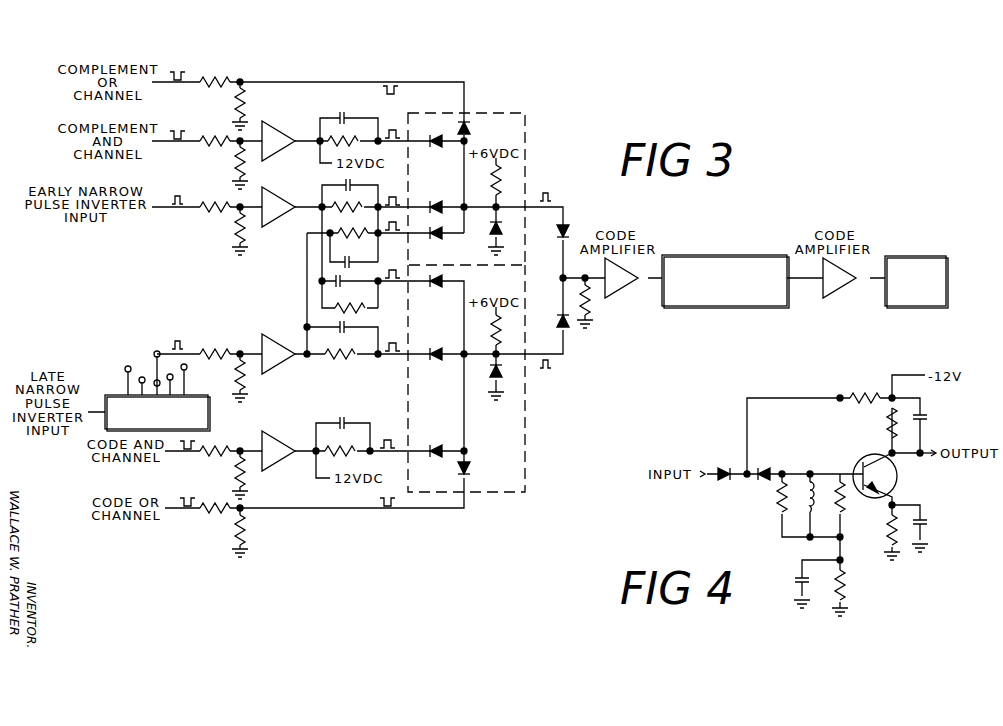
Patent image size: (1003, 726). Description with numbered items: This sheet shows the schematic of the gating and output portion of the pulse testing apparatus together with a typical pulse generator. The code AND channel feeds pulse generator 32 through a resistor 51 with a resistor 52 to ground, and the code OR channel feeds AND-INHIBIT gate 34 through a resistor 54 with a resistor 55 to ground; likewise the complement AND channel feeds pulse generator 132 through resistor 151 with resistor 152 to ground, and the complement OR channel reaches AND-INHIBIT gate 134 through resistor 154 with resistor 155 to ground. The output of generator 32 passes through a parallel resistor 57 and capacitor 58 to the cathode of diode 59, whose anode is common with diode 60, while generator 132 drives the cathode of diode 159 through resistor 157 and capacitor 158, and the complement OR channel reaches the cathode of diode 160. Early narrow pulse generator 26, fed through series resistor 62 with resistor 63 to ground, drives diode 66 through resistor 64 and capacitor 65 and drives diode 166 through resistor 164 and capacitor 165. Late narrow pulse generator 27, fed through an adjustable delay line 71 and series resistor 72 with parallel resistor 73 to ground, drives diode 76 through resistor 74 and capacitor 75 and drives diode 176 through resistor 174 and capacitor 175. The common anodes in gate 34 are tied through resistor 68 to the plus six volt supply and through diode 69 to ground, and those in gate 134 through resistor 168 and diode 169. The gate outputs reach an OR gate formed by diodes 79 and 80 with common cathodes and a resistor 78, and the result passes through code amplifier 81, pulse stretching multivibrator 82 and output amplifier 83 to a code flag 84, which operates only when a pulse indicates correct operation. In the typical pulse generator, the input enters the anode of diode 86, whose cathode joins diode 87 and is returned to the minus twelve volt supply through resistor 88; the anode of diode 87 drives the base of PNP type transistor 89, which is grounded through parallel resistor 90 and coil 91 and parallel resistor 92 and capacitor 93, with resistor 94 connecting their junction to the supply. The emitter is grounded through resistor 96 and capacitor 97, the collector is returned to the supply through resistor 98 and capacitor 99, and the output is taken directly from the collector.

In FIG. 3, the resistor 154 is at (212, 86).
In FIG. 3, the resistor 155 is at (245, 113).
In FIG. 3, the resistor 151 is at (213, 146).
In FIG. 3, the resistor 152 is at (236, 172).
In FIG. 3, the pulse generator 132 is at (276, 130).
In FIG. 3, the capacitor 158 is at (345, 116).
In FIG. 3, the resistor 157 is at (350, 141).
In FIG. 3, the series resistor 62 is at (210, 212).
In FIG. 3, the resistor 63 is at (236, 231).
In FIG. 3, the early narrow pulse generator 26 is at (283, 224).
In FIG. 3, the capacitor 165 is at (344, 183).
In FIG. 3, the resistor 164 is at (341, 210).
In FIG. 3, the resistor 174 is at (358, 238).
In FIG. 3, the capacitor 175 is at (352, 264).
In FIG. 3, the capacitor 65 is at (346, 284).
In FIG. 3, the resistor 64 is at (340, 310).
In FIG. 3, the capacitor 75 is at (352, 326).
In FIG. 3, the late narrow pulse generator 27 is at (276, 336).
In FIG. 3, the adjustable delay line 71 is at (110, 394).
In FIG. 3, the series resistor 72 is at (217, 352).
In FIG. 3, the parallel resistor 73 is at (246, 378).
In FIG. 3, the resistor 74 is at (344, 360).
In FIG. 3, the diode 159 is at (436, 149).
In FIG. 3, the diode 166 is at (439, 204).
In FIG. 3, the diode 176 is at (439, 239).
In FIG. 3, the diode 66 is at (439, 287).
In FIG. 3, the diode 76 is at (439, 360).
In FIG. 3, the diode 160 is at (471, 128).
In FIG. 3, the resistor 168 is at (501, 186).
In FIG. 3, the diode 169 is at (490, 233).
In FIG. 3, the resistor 68 is at (492, 328).
In FIG. 3, the diode 69 is at (501, 380).
In FIG. 3, the AND-INHIBIT gate 134 is at (496, 113).
In FIG. 3, the AND-INHIBIT gate 34 is at (501, 494).
In FIG. 3, the capacitor 58 is at (345, 421).
In FIG. 3, the resistor 57 is at (350, 458).
In FIG. 3, the diode 59 is at (441, 447).
In FIG. 3, the diode 60 is at (471, 468).
In FIG. 3, the pulse generator 32 is at (277, 440).
In FIG. 3, the resistor 51 is at (218, 448).
In FIG. 3, the resistor 52 is at (245, 479).
In FIG. 3, the resistor 54 is at (211, 516).
In FIG. 3, the resistor 55 is at (246, 531).
In FIG. 3, the diode 80 is at (557, 236).
In FIG. 3, the diode 79 is at (558, 326).
In FIG. 3, the resistor 78 is at (592, 318).
In FIG. 3, the code amplifier 81 is at (628, 293).
In FIG. 3, the pulse stretching multivibrator 82 is at (721, 308).
In FIG. 3, the output amplifier 83 is at (838, 297).
In FIG. 3, the code flag 84 is at (925, 309).
In FIG. 4, the diode 86 is at (715, 485).
In FIG. 4, the diode 87 is at (763, 484).
In FIG. 4, the resistor 88 is at (865, 387).
In FIG. 4, the PNP type transistor 89 is at (898, 481).
In FIG. 4, the resistor 90 is at (780, 506).
In FIG. 4, the coil 91 is at (815, 509).
In FIG. 4, the resistor 94 is at (844, 505).
In FIG. 4, the resistor 98 is at (888, 421).
In FIG. 4, the capacitor 99 is at (926, 419).
In FIG. 4, the capacitor 97 is at (926, 522).
In FIG. 4, the resistor 96 is at (887, 531).
In FIG. 4, the capacitor 93 is at (799, 575).
In FIG. 4, the resistor 92 is at (847, 586).